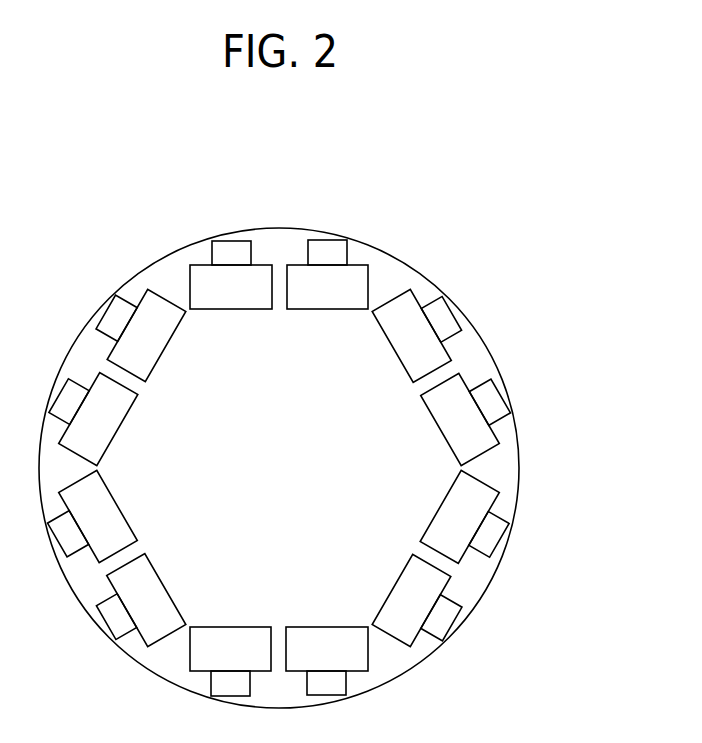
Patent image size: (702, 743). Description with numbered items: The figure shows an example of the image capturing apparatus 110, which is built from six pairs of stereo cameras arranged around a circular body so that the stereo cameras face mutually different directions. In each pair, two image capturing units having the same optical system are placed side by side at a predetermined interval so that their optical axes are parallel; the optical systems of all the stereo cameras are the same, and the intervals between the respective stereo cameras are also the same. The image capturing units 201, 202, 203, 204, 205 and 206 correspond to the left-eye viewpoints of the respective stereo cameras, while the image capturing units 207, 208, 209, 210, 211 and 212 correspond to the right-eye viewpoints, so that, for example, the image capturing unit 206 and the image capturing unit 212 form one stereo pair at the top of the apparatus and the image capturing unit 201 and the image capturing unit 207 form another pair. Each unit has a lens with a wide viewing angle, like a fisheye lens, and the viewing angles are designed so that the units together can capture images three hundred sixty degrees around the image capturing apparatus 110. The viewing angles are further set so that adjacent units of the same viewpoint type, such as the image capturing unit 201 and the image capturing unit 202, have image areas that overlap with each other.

The image capturing apparatus 110 is at (397, 277).
The image capturing unit 201 is at (458, 320).
The image capturing unit 202 is at (493, 533).
The image capturing unit 203 is at (320, 648).
The image capturing unit 204 is at (148, 605).
The image capturing unit 205 is at (105, 411).
The image capturing unit 206 is at (231, 250).
The image capturing unit 207 is at (502, 388).
The image capturing unit 208 is at (447, 618).
The image capturing unit 209 is at (233, 648).
The image capturing unit 210 is at (103, 520).
The image capturing unit 211 is at (164, 329).
The image capturing unit 212 is at (334, 250).